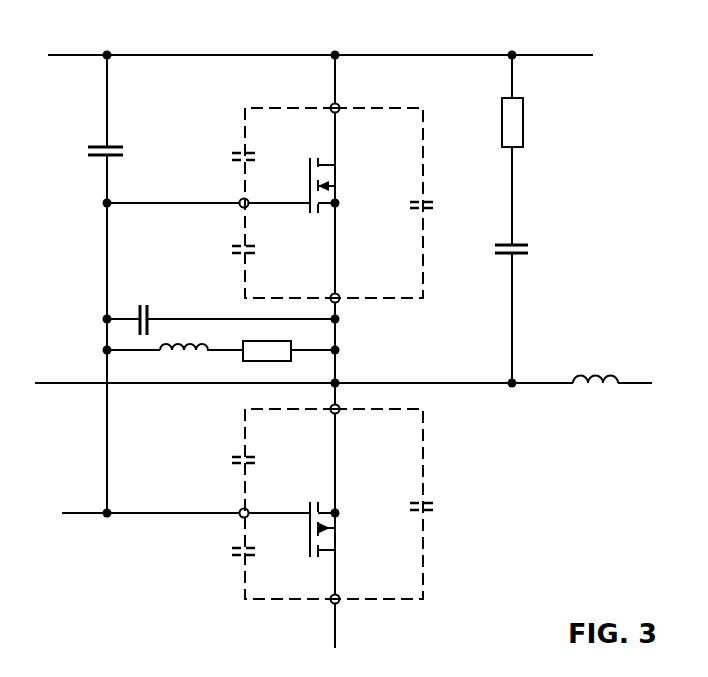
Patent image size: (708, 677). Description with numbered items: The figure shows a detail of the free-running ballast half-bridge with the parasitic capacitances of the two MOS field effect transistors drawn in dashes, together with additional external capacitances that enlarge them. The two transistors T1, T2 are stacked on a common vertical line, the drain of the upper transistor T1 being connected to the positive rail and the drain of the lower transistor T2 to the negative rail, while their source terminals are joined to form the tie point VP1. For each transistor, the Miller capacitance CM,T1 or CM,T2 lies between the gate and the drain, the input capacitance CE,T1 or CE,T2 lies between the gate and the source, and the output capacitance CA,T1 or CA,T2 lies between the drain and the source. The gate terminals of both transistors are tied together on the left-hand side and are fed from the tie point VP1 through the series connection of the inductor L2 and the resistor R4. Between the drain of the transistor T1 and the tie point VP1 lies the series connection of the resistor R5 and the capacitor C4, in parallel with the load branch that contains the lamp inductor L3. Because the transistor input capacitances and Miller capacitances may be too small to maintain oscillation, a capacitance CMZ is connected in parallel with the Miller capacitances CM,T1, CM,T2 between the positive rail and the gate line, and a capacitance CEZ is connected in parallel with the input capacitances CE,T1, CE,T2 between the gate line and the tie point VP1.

The capacitance CMZ is at (80, 134).
The capacitance CEZ is at (143, 304).
The inductor L2 is at (184, 358).
The resistor R4 is at (282, 359).
The tie point VP1 is at (360, 367).
The resistor R5 is at (529, 122).
The capacitor C4 is at (527, 248).
The lamp inductor L3 is at (595, 364).
The MOS field effect transistor T1 is at (340, 185).
The MOS field effect transistor T2 is at (340, 529).
The Miller capacitance CM,T1 is at (283, 203).
The input capacitance CE,T1 is at (268, 267).
The output capacitance CA,T1 is at (385, 203).
The input capacitance CE,T2 is at (283, 504).
The Miller capacitance CM,T2 is at (269, 568).
The output capacitance CA,T2 is at (385, 504).